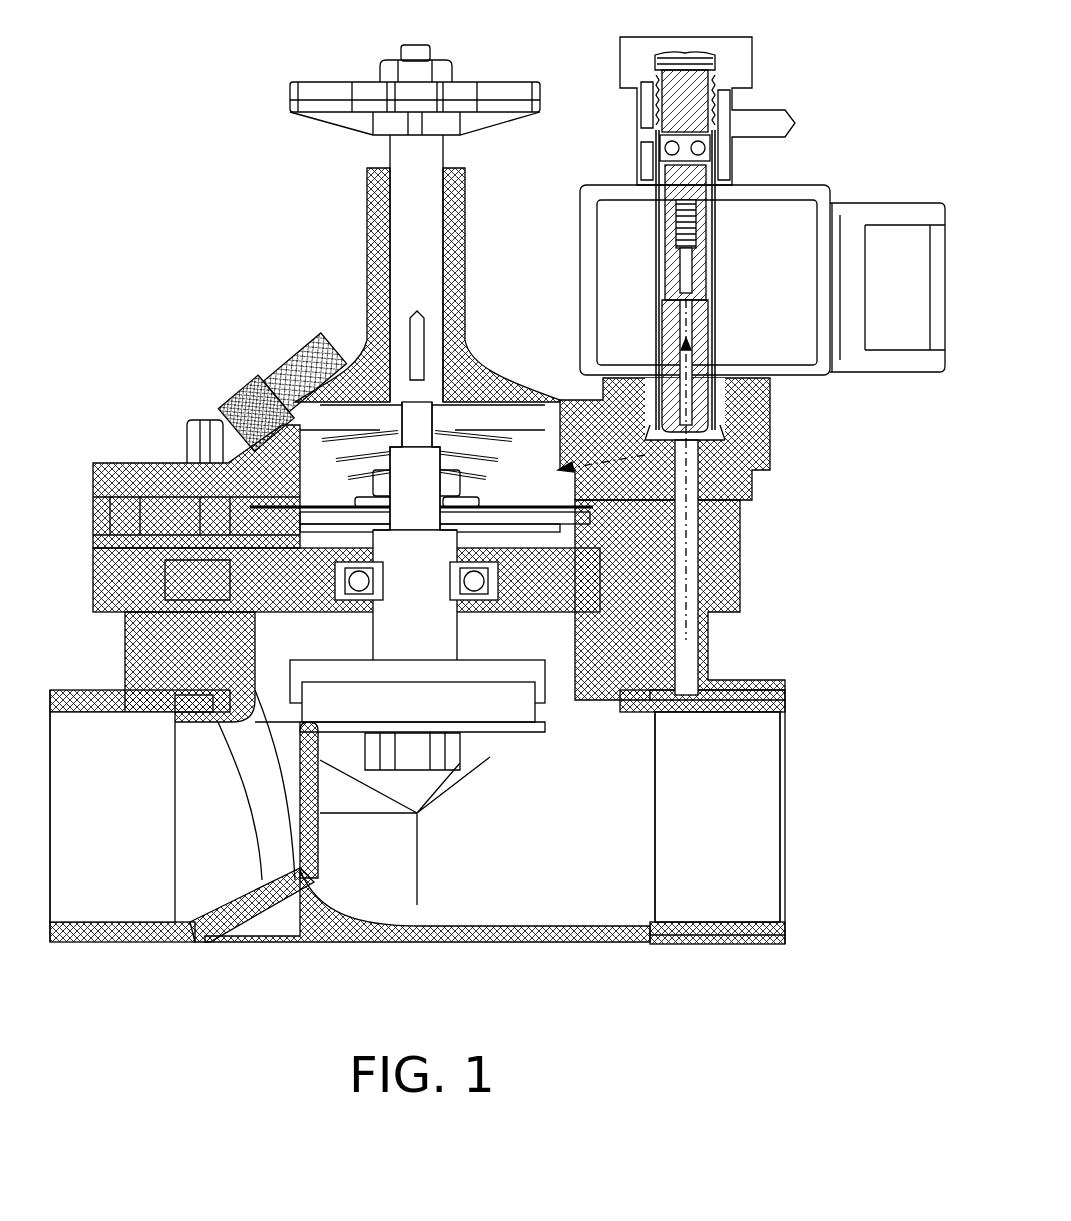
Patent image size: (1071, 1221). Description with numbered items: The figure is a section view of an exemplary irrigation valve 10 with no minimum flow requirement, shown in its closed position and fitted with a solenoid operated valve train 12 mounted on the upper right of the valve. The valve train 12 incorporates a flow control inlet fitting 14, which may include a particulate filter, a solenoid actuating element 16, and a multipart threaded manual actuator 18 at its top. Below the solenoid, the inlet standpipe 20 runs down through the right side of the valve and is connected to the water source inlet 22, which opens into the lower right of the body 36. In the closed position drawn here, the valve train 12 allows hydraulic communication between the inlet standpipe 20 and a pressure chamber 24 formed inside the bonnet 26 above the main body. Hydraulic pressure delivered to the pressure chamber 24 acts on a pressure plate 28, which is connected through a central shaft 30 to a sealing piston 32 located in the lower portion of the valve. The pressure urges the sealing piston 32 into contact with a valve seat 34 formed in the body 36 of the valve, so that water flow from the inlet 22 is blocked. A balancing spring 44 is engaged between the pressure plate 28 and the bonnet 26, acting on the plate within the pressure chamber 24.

The irrigation valve 10 is at (235, 85).
The solenoid operated valve train 12 is at (822, 115).
The flow control inlet fitting 14 is at (710, 345).
The solenoid actuating element 16 is at (707, 220).
The multipart threaded manual actuator 18 is at (690, 97).
The inlet standpipe 20 is at (690, 527).
The water source inlet 22 is at (705, 820).
The pressure chamber 24 is at (527, 470).
The bonnet 26 is at (313, 373).
The pressure plate 28 is at (335, 520).
The shaft 30 is at (405, 590).
The sealing piston 32 is at (500, 707).
The valve seat 34 is at (310, 865).
The body 36 is at (160, 668).
The balancing spring 44 is at (360, 430).